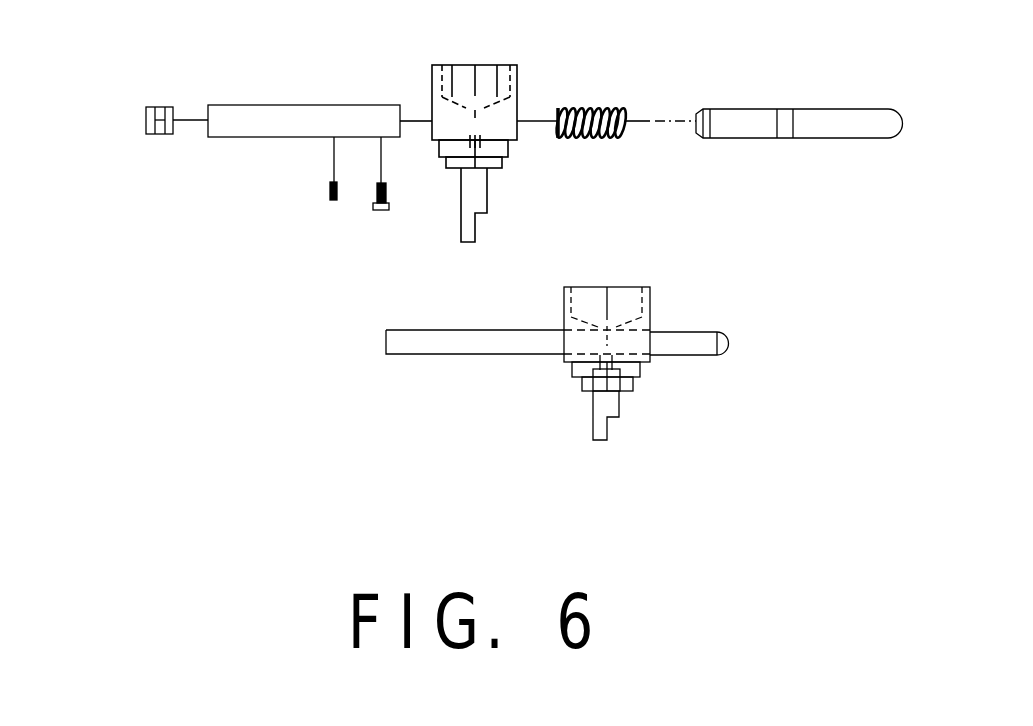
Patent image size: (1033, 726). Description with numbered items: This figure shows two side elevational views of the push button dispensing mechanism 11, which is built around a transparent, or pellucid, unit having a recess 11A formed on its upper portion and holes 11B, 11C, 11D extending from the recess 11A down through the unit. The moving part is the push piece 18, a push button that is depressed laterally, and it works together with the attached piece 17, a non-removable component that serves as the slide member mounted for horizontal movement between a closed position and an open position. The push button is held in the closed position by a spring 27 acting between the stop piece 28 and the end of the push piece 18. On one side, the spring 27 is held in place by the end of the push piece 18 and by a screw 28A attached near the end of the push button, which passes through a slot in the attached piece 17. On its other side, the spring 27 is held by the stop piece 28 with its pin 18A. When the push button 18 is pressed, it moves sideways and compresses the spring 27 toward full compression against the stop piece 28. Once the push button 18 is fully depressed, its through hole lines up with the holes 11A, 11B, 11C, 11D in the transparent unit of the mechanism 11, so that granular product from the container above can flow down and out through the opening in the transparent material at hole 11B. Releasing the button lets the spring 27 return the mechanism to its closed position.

The push button dispensing mechanism 11 is at (640, 368).
The recess 11A is at (642, 303).
The hole 11B is at (593, 440).
The hole 11C is at (617, 325).
The hole 11D is at (585, 367).
The attached piece 17 is at (290, 137).
The push piece 18 is at (803, 109).
The pin 18A is at (328, 200).
The spring 27 is at (582, 140).
The stop piece 28 is at (148, 127).
The screw 28A is at (377, 210).